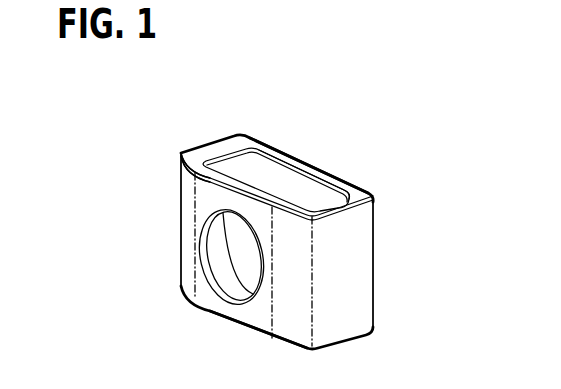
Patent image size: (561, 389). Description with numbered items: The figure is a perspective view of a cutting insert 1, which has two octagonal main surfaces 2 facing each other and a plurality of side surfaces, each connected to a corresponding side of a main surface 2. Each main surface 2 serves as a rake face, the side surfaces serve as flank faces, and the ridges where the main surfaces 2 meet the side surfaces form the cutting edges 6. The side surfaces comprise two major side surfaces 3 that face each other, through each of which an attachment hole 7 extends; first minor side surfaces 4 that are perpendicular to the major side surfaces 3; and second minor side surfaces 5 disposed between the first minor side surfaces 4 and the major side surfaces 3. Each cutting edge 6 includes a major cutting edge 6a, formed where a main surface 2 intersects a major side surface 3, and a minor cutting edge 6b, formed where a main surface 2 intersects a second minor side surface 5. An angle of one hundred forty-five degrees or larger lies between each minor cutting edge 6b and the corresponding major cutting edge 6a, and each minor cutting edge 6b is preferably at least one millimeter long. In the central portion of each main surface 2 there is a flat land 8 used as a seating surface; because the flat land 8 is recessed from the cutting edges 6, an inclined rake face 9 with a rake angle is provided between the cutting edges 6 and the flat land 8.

The cutting insert 1 is at (339, 149).
The main surface 2 is at (264, 158).
The major side surface 3 is at (264, 312).
The first minor side surface 4 is at (370, 276).
The second minor side surface 5 is at (183, 243).
The cutting edge 6 is at (78, 138).
The major cutting edge 6a is at (215, 183).
The minor cutting edge 6b is at (181, 163).
The attachment hole 7 is at (220, 268).
The flat land 8 is at (323, 198).
The inclined rake face 9 is at (301, 161).